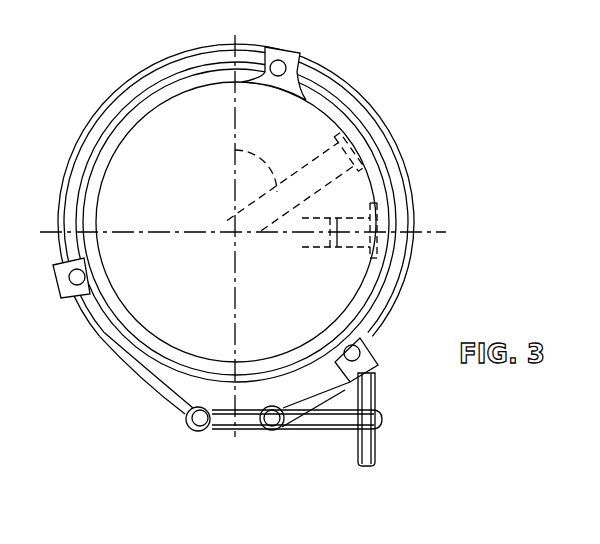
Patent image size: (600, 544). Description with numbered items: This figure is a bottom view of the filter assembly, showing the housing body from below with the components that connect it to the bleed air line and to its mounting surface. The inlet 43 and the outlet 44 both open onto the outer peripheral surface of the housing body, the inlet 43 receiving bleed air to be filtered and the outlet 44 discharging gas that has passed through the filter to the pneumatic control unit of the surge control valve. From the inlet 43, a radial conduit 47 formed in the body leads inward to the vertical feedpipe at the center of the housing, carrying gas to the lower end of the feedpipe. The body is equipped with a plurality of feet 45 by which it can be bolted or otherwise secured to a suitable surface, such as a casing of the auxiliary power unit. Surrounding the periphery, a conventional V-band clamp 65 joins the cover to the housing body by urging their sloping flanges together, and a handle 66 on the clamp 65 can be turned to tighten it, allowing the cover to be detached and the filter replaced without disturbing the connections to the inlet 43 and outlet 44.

The inlet 43 is at (349, 95).
The outlet 44 is at (393, 177).
The feet 45 is at (300, 52).
The radial conduit 47 is at (235, 150).
The V-band clamp 65 is at (410, 265).
The handle 66 is at (362, 452).